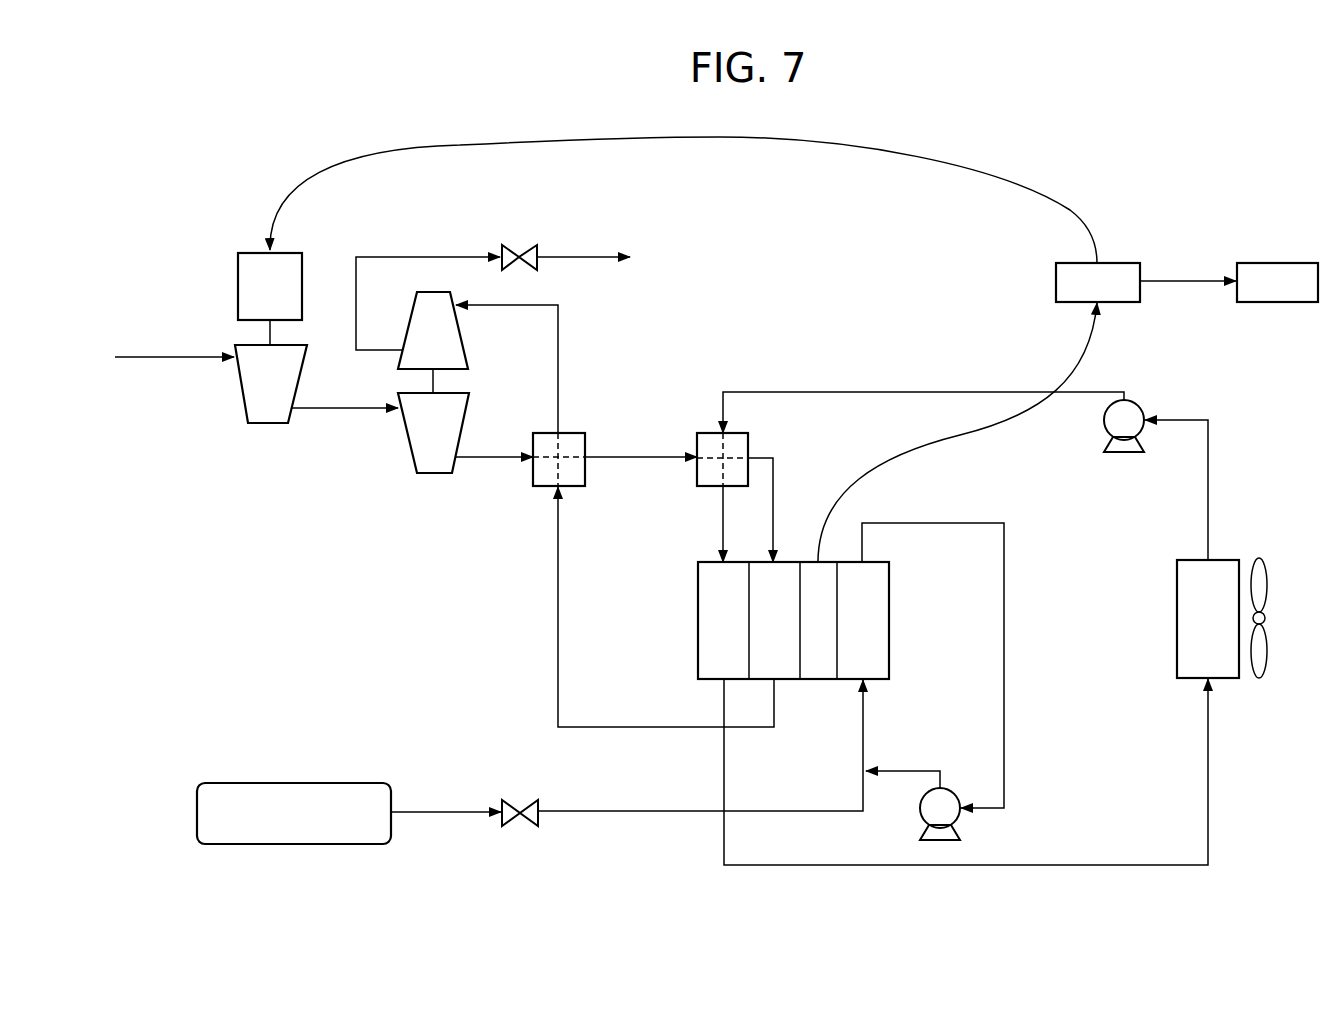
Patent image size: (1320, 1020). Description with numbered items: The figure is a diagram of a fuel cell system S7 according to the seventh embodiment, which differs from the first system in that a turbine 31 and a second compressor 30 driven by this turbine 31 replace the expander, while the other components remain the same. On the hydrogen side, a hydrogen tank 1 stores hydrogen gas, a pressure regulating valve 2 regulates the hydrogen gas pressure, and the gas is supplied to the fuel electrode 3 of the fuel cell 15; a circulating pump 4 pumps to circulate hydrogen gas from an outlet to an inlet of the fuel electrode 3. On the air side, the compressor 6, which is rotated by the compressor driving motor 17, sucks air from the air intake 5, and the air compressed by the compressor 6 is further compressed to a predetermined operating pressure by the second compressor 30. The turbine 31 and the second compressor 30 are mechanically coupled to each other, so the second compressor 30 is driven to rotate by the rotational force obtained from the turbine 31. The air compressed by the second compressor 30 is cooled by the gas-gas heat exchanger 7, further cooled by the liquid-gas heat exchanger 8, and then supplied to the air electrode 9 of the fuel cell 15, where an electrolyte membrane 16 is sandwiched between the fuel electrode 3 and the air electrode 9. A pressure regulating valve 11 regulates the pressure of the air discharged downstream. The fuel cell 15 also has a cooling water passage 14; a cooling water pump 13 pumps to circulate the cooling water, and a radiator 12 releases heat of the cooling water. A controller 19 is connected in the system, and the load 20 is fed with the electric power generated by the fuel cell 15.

The fuel cell system S7 is at (193, 157).
The hydrogen tank 1 is at (293, 783).
The pressure regulating valve 2 is at (520, 800).
The fuel electrode 3 is at (871, 620).
The circulating pump 4 is at (947, 790).
The air intake 5 is at (162, 358).
The compressor 6 is at (248, 397).
The gas-gas heat exchanger 7 is at (533, 440).
The liquid-gas heat exchanger 8 is at (697, 440).
The air electrode 9 is at (782, 620).
The pressure regulating valve 11 is at (521, 248).
The radiator 12 is at (1177, 592).
The cooling water pump 13 is at (1124, 453).
The cooling water passage 14 is at (727, 620).
The fuel cell 15 is at (899, 619).
The electrolyte membrane 16 is at (819, 620).
The compressor driving motor 17 is at (238, 274).
The controller 19 is at (1115, 263).
The load 20 is at (1285, 263).
The second compressor 30 is at (410, 447).
The turbine 31 is at (412, 305).